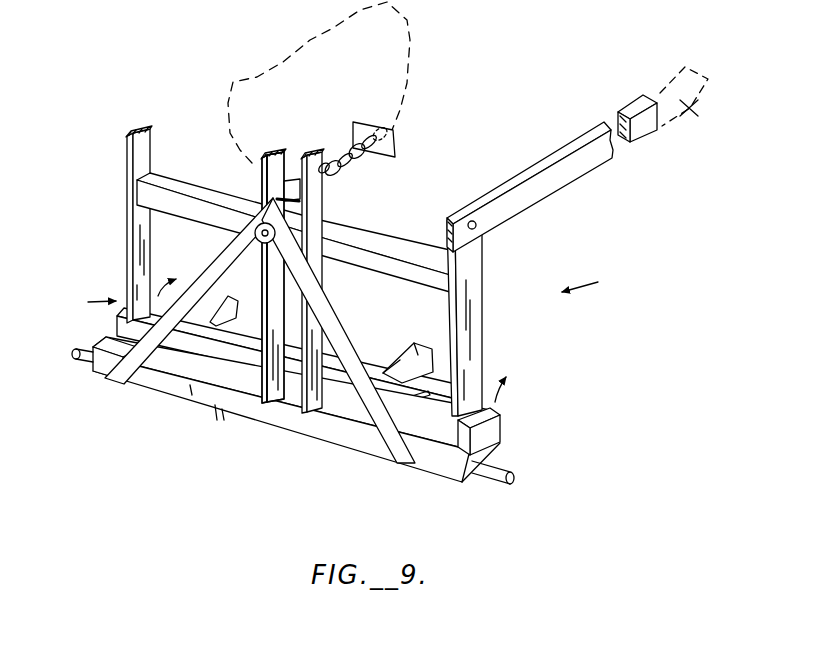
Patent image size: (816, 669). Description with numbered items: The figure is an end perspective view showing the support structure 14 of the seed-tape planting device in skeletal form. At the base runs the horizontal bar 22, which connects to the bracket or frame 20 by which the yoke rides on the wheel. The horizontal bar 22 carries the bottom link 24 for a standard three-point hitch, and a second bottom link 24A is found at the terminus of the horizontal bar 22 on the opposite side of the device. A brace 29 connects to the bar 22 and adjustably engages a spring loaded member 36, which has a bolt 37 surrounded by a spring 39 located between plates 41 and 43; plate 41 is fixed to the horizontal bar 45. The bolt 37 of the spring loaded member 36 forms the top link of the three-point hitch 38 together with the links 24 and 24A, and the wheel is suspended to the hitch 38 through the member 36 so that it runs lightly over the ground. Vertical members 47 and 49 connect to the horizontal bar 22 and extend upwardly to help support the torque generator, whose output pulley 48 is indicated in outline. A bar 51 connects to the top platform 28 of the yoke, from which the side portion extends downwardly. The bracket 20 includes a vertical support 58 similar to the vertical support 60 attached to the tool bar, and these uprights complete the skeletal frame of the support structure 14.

The support structure 14 is at (594, 280).
The bracket or frame 20 is at (408, 358).
The horizontal bar 22 is at (234, 405).
The bottom link 24 is at (78, 360).
The bottom link 24A is at (504, 470).
The top platform 28 is at (688, 108).
The brace 29 is at (118, 382).
The spring loaded member 36 is at (353, 149).
The bolt 37 is at (367, 150).
The 3-point hitch 38 is at (117, 298).
The spring 39 is at (334, 178).
The plate 41 is at (293, 158).
The plate 43 is at (396, 145).
The horizontal bar 45 is at (167, 180).
The vertical member 47 is at (276, 405).
The output pulley 48 is at (400, 62).
The vertical member 49 is at (318, 410).
The bar 51 is at (530, 190).
The vertical support 58 is at (477, 357).
The vertical support 60 is at (128, 233).